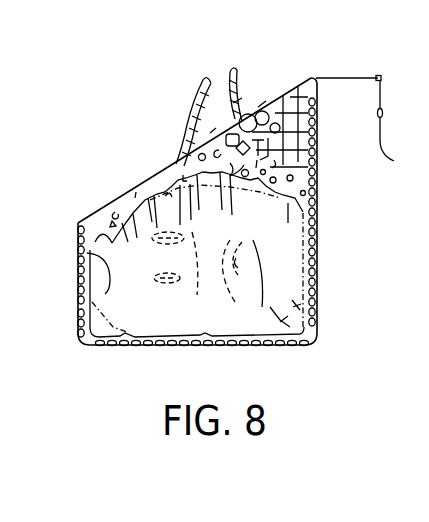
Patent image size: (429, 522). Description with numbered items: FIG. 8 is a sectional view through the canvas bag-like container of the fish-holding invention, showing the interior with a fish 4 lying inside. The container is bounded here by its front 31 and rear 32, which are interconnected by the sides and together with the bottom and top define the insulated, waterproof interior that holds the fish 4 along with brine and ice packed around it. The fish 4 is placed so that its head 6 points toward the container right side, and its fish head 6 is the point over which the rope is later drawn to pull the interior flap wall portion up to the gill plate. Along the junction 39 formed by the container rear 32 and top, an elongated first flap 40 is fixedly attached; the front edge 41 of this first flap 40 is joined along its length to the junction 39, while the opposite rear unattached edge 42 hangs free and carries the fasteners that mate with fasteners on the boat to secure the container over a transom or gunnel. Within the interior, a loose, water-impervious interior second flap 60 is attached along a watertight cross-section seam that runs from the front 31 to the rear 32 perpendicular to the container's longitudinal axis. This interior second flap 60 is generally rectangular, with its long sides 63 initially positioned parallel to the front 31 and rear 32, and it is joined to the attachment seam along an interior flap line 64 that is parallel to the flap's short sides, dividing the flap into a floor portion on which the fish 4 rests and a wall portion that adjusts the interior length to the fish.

The fish 4 is at (245, 220).
The fish head 6 is at (213, 295).
The container front 31 is at (78, 252).
The container rear 32 is at (318, 222).
The junction 39 is at (310, 77).
The first flap 40 is at (381, 76).
The front edge 41 is at (316, 77).
The rear unattached edge 42 is at (400, 127).
The interior second flap 60 is at (162, 320).
The interior flap long sides 63 is at (78, 259).
The interior flap line 64 is at (318, 298).